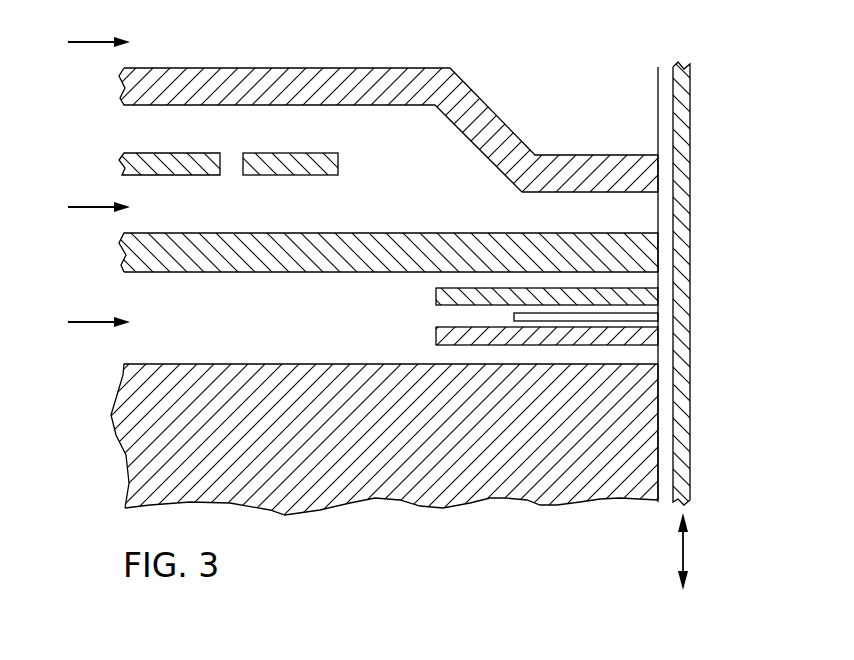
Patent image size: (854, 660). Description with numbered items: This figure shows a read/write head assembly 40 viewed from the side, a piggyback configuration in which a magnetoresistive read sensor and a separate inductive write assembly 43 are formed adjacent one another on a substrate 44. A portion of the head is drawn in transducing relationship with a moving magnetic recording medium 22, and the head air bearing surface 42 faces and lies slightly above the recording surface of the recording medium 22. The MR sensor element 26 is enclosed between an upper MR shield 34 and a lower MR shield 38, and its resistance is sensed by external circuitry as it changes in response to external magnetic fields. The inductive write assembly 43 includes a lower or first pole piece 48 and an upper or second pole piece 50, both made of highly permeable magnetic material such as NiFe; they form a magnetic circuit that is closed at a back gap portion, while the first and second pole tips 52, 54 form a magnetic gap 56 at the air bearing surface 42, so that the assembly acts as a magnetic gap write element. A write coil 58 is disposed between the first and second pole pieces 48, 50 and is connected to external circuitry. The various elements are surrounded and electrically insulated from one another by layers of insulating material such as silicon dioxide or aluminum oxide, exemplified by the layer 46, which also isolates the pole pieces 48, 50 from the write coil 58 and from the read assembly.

The moving magnetic recording medium 22 is at (689, 77).
The MR sensor element 26 is at (657, 317).
The upper MR shield 34 is at (635, 288).
The lower MR shield 38 is at (635, 345).
The read/write head assembly 40 is at (400, 535).
The air bearing surface 42 is at (658, 124).
The inductive write assembly 43 is at (616, 138).
The substrate 44 is at (497, 500).
The insulating layer 46 is at (83, 183).
The first pole piece 48 is at (337, 272).
The second pole piece 50 is at (350, 68).
The first pole tip 52 is at (655, 252).
The second pole tip 54 is at (647, 176).
The magnetic gap 56 is at (647, 213).
The write coil 58 is at (120, 160).